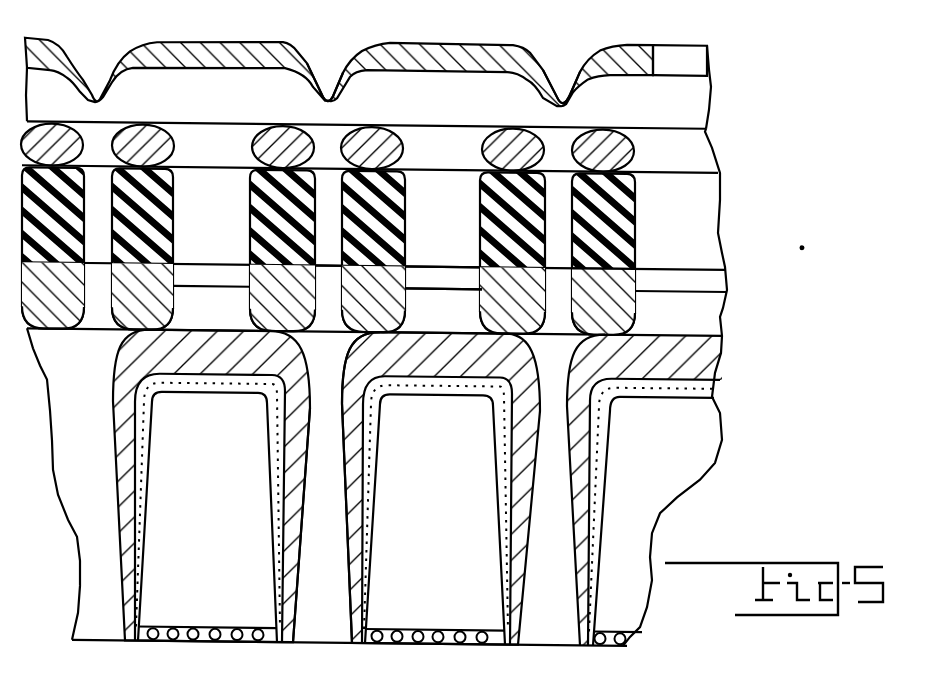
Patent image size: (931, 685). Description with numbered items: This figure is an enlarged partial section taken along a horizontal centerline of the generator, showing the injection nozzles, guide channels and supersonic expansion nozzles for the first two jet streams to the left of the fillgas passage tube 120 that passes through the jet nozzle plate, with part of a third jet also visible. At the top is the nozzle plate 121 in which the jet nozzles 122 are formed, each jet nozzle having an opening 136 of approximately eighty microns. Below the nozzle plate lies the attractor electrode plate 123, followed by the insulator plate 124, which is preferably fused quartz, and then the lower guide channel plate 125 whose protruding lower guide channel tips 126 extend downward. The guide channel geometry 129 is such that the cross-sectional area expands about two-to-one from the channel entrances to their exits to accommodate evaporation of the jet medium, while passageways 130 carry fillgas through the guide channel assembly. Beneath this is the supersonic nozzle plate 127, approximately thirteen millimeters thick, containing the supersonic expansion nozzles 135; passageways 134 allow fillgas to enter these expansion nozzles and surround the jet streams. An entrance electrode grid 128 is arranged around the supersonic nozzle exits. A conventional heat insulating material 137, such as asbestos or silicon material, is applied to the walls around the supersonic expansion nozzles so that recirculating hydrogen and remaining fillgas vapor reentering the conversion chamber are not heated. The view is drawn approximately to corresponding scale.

The fillgas passage tube 120 is at (707, 54).
The nozzle plate 121 is at (408, 65).
The jet nozzles 122 is at (331, 101).
The attractor electrode plate 123 is at (712, 140).
The insulator plate 124 is at (720, 215).
The lower guide channel plate 125 is at (727, 292).
The protruding lower guide channel tips 126 is at (625, 308).
The supersonic nozzle plate 127 is at (720, 404).
The entrance electrode grid 128 is at (397, 622).
The guide channel geometry 129 is at (334, 250).
The passageways for the fillgas through the guide channel assembly 130 is at (449, 234).
The passageways for fillgas to enter the supersonic expansion nozzles 134 is at (346, 350).
The supersonic expansion nozzles 135 is at (332, 501).
The opening 136 is at (563, 104).
The heat insulating material 137 is at (372, 476).